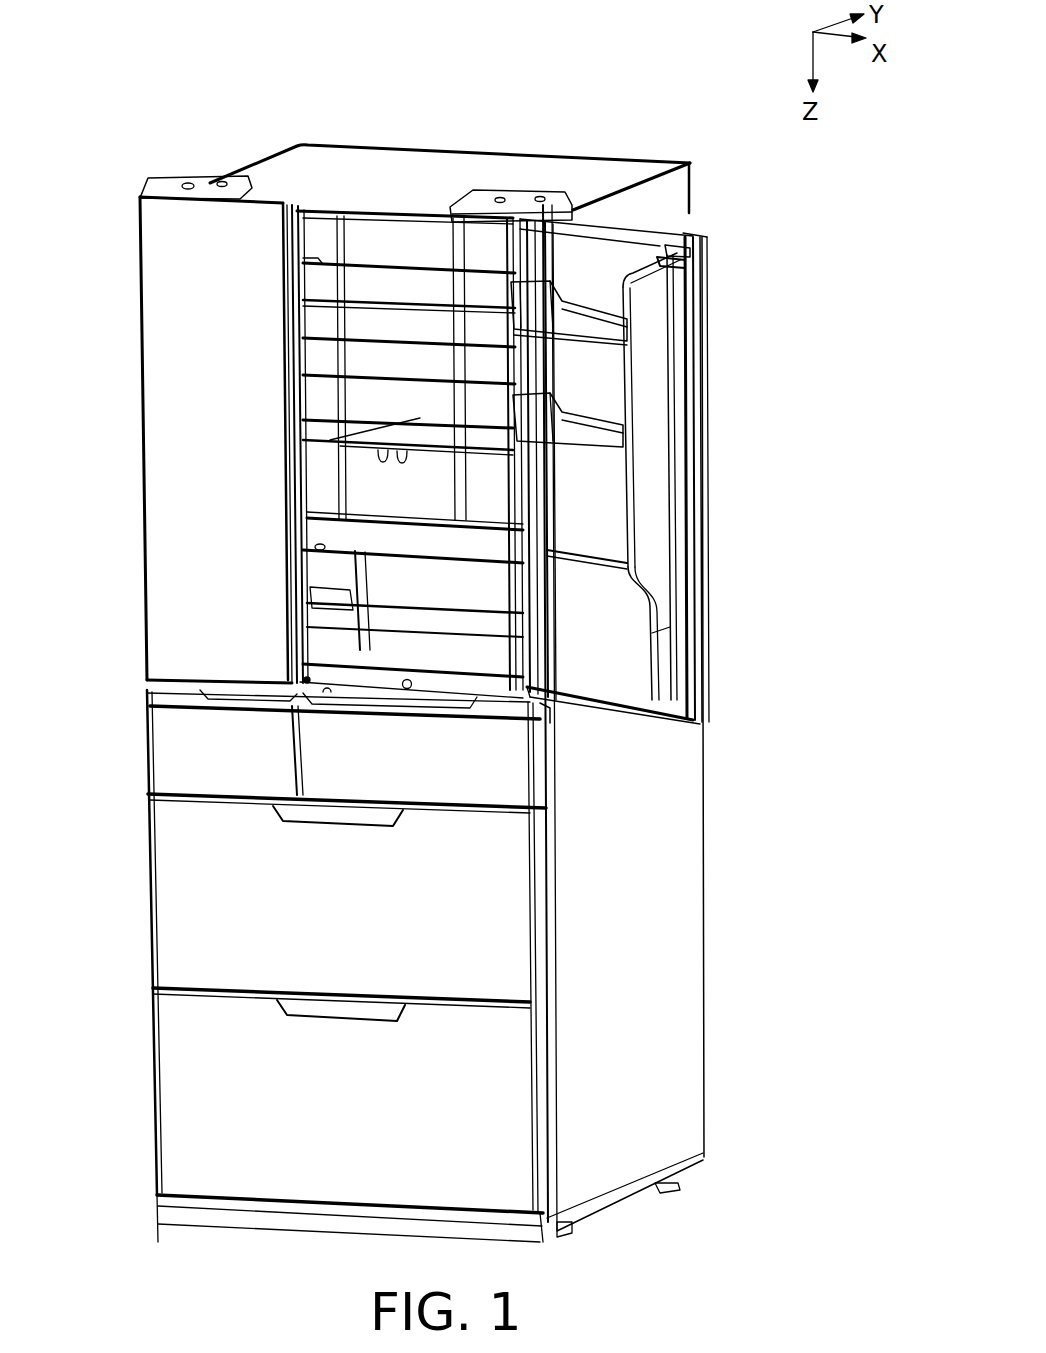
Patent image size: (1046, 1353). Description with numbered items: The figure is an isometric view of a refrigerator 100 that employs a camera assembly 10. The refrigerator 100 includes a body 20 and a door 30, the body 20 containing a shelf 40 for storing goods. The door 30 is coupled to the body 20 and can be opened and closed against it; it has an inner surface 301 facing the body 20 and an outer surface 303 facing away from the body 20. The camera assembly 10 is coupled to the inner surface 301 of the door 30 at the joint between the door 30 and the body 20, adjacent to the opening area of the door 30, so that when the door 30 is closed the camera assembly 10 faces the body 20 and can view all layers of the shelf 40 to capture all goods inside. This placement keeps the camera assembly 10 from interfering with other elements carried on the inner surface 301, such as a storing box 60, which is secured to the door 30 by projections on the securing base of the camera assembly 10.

The refrigerator 100 is at (190, 41).
The camera assembly 10 is at (651, 498).
The body 20 is at (598, 172).
The door 30 is at (670, 244).
The shelf 40 is at (357, 288).
The storing box 60 is at (603, 336).
The inner surface 301 is at (607, 663).
The outer surface 303 is at (163, 569).